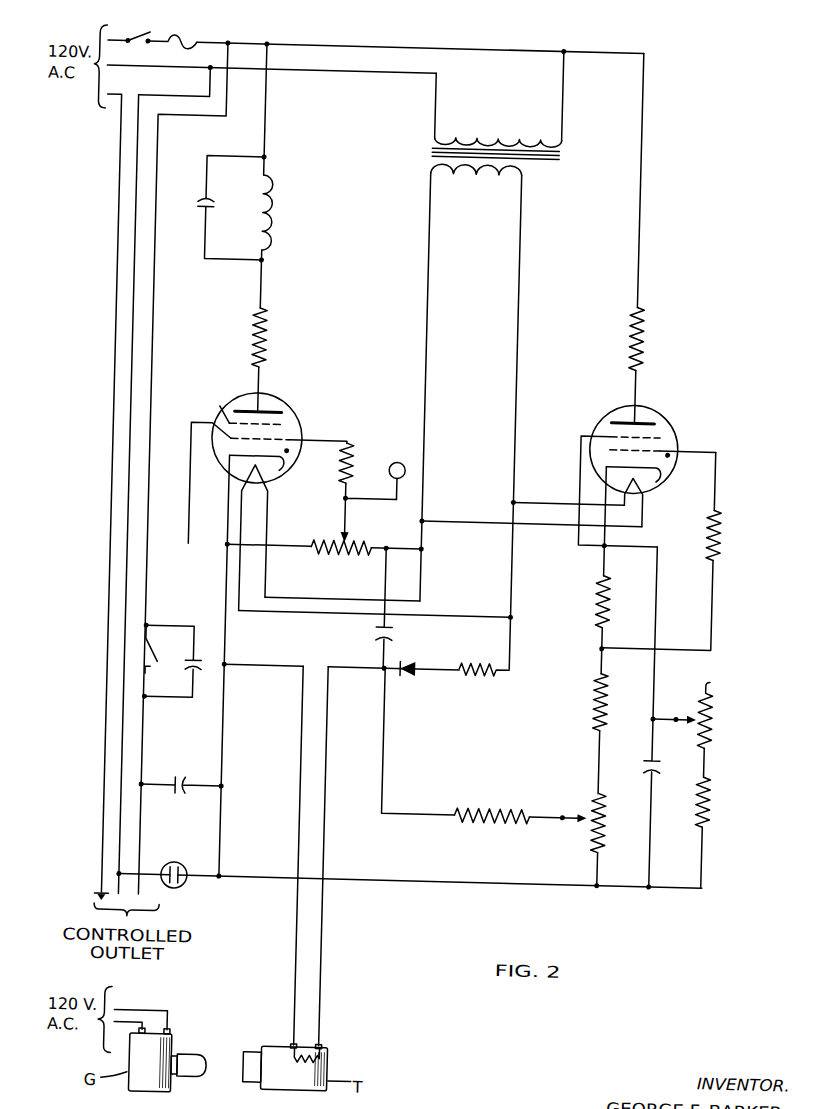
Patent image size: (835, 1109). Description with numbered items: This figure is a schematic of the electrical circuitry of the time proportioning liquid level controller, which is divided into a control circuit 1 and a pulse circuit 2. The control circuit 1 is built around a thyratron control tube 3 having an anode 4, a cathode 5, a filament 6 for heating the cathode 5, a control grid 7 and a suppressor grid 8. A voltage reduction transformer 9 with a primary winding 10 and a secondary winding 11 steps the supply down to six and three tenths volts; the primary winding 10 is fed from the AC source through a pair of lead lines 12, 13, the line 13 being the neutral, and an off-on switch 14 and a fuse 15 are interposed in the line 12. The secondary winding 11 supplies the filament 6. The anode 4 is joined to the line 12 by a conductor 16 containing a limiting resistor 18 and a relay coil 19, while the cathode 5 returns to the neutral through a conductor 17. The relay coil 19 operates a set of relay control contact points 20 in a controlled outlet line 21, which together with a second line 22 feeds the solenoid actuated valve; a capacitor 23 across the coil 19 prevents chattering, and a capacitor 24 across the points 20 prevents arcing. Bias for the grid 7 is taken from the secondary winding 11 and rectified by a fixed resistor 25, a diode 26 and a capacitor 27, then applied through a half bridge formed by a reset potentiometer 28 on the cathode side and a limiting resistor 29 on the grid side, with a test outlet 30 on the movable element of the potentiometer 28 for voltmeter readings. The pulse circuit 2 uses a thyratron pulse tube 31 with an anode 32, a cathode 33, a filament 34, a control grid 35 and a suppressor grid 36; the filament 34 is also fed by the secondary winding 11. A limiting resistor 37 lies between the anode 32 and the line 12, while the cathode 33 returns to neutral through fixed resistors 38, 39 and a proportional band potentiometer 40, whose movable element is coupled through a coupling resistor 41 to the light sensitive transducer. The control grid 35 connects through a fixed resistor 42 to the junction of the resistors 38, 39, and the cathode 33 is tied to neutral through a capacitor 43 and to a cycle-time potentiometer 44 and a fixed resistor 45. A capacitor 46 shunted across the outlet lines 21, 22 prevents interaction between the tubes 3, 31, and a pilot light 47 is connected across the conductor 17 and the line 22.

The control circuit 1 is at (349, 522).
The pulse circuit 2 is at (652, 466).
The thyratron control tube 3 is at (306, 408).
The anode 4 is at (274, 406).
The cathode 5 is at (300, 466).
The filament 6 is at (269, 479).
The control grid 7 is at (224, 418).
The suppressor grid 8 is at (235, 400).
The voltage reduction transformer 9 is at (567, 136).
The primary winding 10 is at (494, 120).
The secondary winding 11 is at (510, 164).
The lead line 12 is at (404, 38).
The lead line 13 is at (389, 68).
The off-on switch 14 is at (148, 32).
The fuse 15 is at (190, 41).
The conductor 16 is at (270, 123).
The conductor 17 is at (247, 822).
The limiting resistor 18 is at (279, 326).
The relay coil 19 is at (272, 209).
The relay control contact points 20 is at (172, 633).
The controlled outlet line 21 is at (166, 725).
The second line 22 is at (140, 723).
The capacitor 23 is at (204, 208).
The capacitor 24 is at (218, 659).
The fixed resistor 25 is at (499, 669).
The diode 26 is at (429, 668).
The capacitor 27 is at (411, 629).
The reset potentiometer 28 is at (342, 543).
The limiting resistor 29 is at (364, 443).
The test outlet 30 is at (416, 463).
The thyratron pulse tube 31 is at (682, 410).
The anode 32 is at (661, 403).
The cathode 33 is at (680, 470).
The filament 34 is at (650, 483).
The control grid 35 is at (676, 436).
The suppressor grid 36 is at (620, 424).
The limiting resistor 37 is at (656, 329).
The fixed resistor 38 is at (612, 578).
The fixed resistor 39 is at (610, 697).
The proportional band potentiometer 40 is at (607, 835).
The coupling resistor 41 is at (516, 800).
The fixed resistor 42 is at (735, 515).
The capacitor 43 is at (661, 746).
The cycle-time potentiometer 44 is at (728, 711).
The fixed resistor 45 is at (730, 790).
The capacitor 46 is at (198, 793).
The pilot light 47 is at (202, 860).